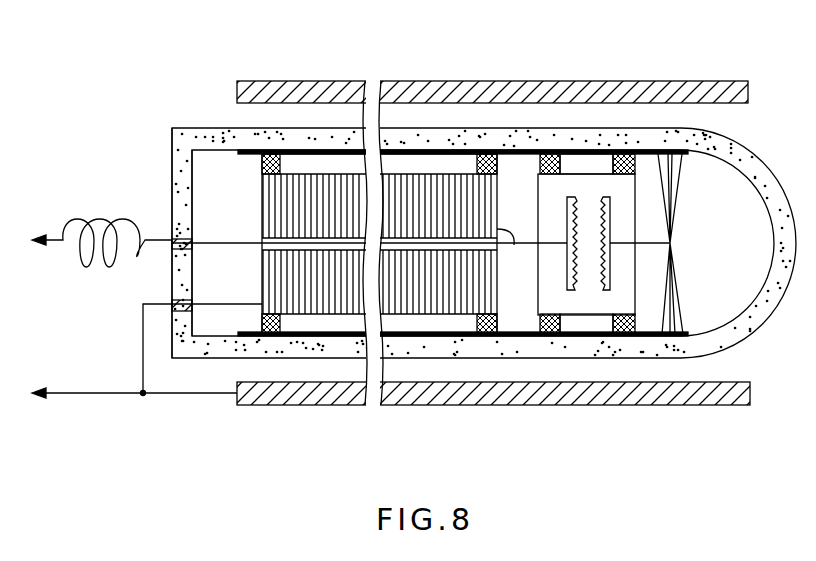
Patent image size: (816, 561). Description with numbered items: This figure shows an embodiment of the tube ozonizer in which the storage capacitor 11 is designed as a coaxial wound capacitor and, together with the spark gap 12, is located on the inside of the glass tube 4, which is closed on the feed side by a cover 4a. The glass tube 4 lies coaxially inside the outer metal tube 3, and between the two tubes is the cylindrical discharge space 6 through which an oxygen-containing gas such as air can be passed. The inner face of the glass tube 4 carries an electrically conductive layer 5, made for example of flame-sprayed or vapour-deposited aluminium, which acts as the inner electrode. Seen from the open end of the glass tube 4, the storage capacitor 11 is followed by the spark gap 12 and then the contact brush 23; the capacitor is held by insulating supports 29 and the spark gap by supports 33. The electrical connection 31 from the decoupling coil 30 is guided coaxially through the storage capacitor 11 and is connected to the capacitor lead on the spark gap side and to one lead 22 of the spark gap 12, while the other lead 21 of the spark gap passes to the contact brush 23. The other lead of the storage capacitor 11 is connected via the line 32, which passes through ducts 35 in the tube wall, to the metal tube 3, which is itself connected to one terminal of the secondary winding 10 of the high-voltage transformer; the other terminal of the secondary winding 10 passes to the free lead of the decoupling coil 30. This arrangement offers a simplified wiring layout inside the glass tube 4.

The outer metal tube 3 is at (712, 95).
The glass tube 4 is at (748, 325).
The cover 4a is at (183, 172).
The electrically conductive layer 5 is at (648, 152).
The discharge space 6 is at (710, 121).
The secondary winding 10 is at (36, 337).
The storage capacitor 11 is at (355, 292).
The spark gap 12 is at (588, 318).
The lead of the spark gap 21 is at (652, 246).
The lead of the spark gap 22 is at (526, 243).
The contact brush 23 is at (670, 243).
The supports 29 is at (273, 154).
The decoupling coil 30 is at (80, 216).
The electrical connection 31 is at (221, 243).
The line 32 is at (219, 304).
The supports 33 is at (556, 155).
The ducts 35 is at (172, 250).